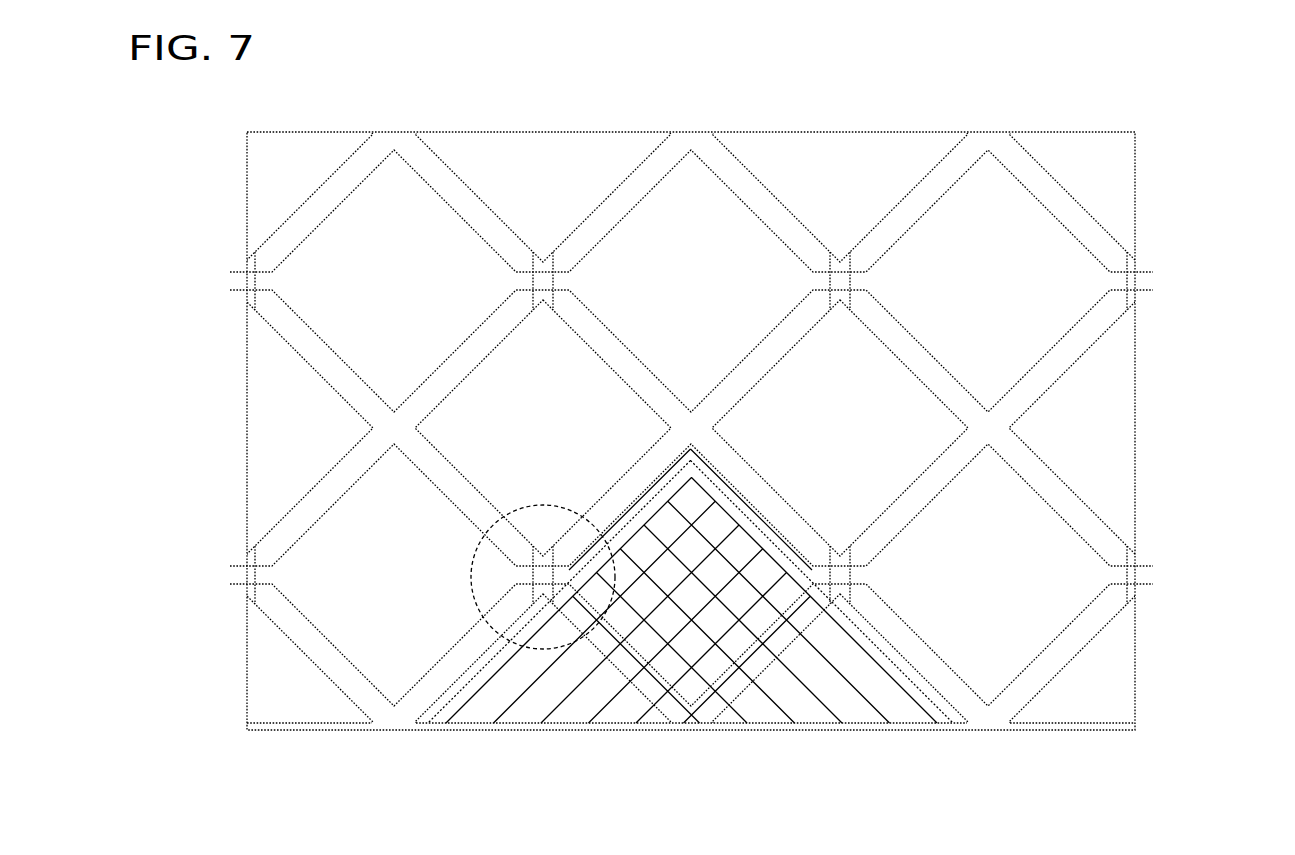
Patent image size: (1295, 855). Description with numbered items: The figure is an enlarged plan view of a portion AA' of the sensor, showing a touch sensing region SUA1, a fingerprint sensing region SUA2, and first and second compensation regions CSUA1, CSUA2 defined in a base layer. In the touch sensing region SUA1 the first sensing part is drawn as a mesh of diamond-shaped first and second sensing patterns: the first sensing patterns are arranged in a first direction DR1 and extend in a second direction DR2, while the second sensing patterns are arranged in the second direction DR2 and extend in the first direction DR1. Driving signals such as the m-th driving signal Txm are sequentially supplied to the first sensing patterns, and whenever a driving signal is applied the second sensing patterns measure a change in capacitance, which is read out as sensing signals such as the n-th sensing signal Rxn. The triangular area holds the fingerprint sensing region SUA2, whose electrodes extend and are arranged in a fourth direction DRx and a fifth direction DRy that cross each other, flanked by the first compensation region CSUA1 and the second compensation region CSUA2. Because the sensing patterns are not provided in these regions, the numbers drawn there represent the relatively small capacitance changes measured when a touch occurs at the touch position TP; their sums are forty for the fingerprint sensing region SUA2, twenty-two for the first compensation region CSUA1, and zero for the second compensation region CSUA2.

The portion AA' is at (691, 391).
The m-th driving signal Txm is at (240, 281).
The n-th sensing signal Rxn is at (541, 140).
The touch position TP is at (544, 506).
The touch sensing region SUA1 is at (965, 732).
The fingerprint sensing region SUA2 is at (713, 725).
The first compensation region CSUA1 is at (575, 725).
The second compensation region CSUA2 is at (785, 725).
The first direction DR1 is at (1155, 690).
The second direction DR2 is at (1155, 690).
The fourth direction DRx is at (1155, 690).
The fifth direction DRy is at (1155, 690).